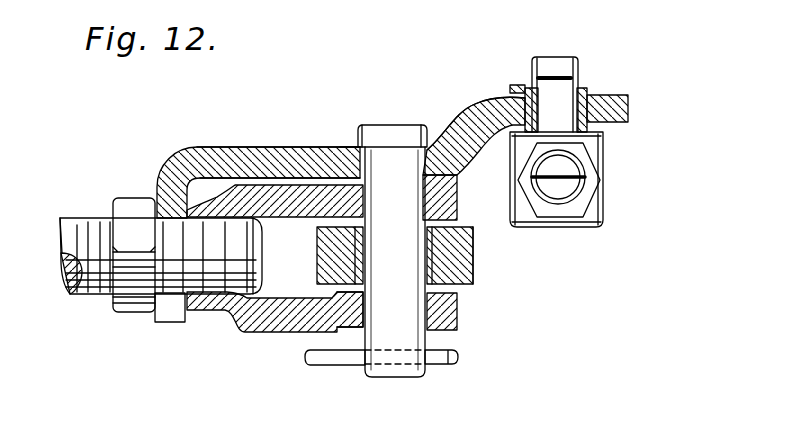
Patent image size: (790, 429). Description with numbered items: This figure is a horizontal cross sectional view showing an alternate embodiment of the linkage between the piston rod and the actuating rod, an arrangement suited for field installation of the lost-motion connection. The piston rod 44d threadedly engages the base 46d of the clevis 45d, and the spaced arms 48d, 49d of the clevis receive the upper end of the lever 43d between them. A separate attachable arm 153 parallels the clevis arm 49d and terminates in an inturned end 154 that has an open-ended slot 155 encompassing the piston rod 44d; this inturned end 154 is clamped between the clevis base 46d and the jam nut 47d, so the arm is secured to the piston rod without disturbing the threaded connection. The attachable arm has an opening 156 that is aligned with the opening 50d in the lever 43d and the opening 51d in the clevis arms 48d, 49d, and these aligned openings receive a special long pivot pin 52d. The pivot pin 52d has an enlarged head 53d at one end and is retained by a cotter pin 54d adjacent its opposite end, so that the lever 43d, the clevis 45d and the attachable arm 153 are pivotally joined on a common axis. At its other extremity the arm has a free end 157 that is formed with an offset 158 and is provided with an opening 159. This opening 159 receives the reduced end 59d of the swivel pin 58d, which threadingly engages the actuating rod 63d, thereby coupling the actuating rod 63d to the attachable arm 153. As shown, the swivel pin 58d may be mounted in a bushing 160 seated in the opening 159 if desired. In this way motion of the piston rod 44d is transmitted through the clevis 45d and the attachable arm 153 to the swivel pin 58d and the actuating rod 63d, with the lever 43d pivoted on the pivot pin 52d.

The piston rod 44d is at (78, 188).
The jam nut 47d is at (128, 294).
The open-ended slot 155 is at (173, 325).
The inturned end 154 is at (157, 190).
The clevis base 46d is at (205, 210).
The attachable arm 153 is at (318, 104).
The clevis arm 49d is at (297, 200).
The clevis 45d is at (268, 326).
The clevis arm opening 51d is at (340, 147).
The enlarged head 53d is at (383, 137).
The pivot pin 52d is at (395, 288).
The cotter pin 54d is at (458, 357).
The lever opening 50d is at (468, 262).
The clevis arm 48d is at (457, 316).
The offset 158 is at (487, 175).
The lever 43d is at (515, 255).
The arm opening 156 is at (420, 162).
The free end opening 159 is at (508, 95).
The bushing 160 is at (580, 105).
The free end 157 is at (628, 106).
The reduced end 59d is at (553, 65).
The swivel pin 58d is at (603, 216).
The actuating rod 63d is at (575, 165).